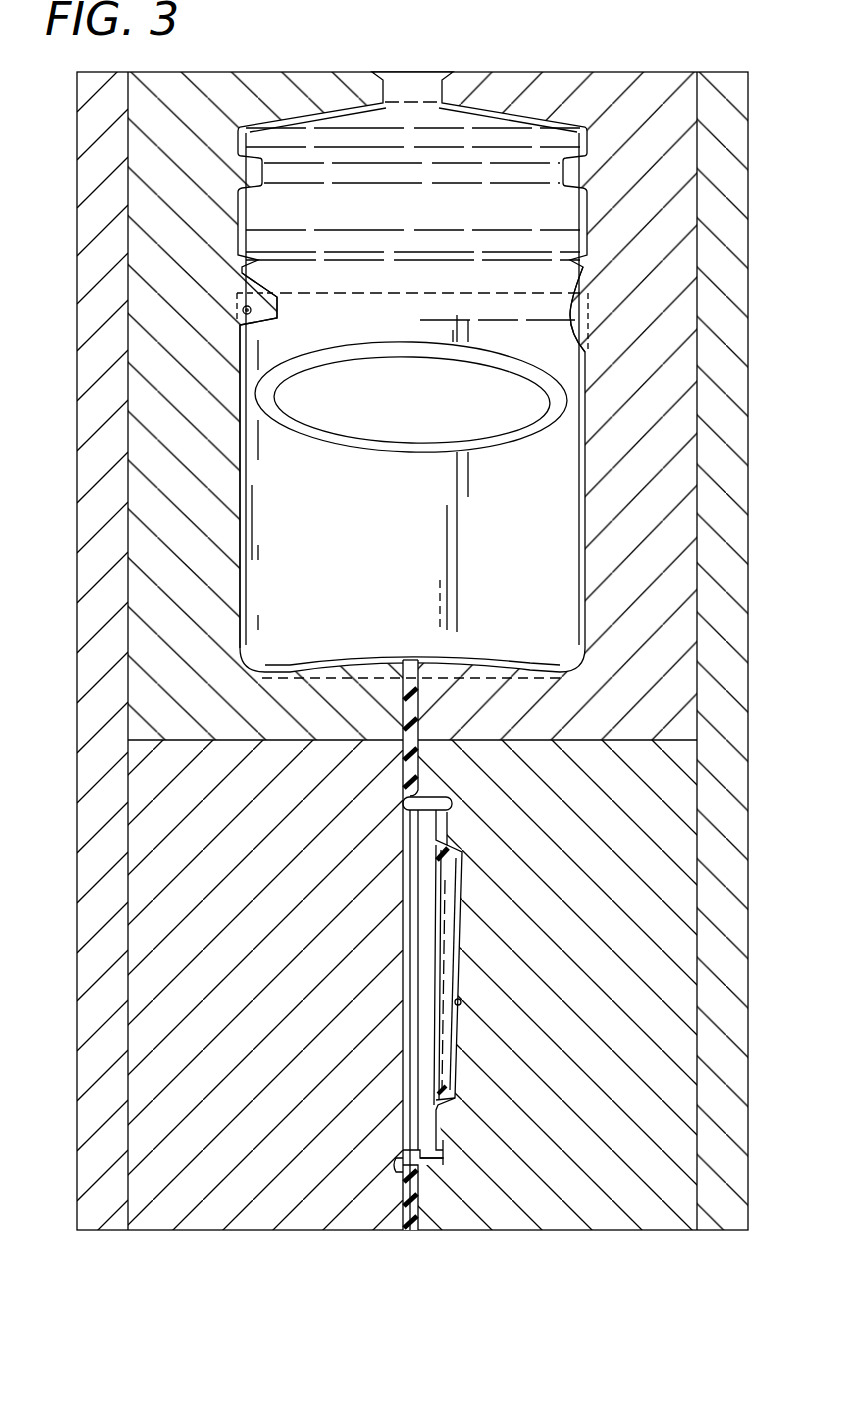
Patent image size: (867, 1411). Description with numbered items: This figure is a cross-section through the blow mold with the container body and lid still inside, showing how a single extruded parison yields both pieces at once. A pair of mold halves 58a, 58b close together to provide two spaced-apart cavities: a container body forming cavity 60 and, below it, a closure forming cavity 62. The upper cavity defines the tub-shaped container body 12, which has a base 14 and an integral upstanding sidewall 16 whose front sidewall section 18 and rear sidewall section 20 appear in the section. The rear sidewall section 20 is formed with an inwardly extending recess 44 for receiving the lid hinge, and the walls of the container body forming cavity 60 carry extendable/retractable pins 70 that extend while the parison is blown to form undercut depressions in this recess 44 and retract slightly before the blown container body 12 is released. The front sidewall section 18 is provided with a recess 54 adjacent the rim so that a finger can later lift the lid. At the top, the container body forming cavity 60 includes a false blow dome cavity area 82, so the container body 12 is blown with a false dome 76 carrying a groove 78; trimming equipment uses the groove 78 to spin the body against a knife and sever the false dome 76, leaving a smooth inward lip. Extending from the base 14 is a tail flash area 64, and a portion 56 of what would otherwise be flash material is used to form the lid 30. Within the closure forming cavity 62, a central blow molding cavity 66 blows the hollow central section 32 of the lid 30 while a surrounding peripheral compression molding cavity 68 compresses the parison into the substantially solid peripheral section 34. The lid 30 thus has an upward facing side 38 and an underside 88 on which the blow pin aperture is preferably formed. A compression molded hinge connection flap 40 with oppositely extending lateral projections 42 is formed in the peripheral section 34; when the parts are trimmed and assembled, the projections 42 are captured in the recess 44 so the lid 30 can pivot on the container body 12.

The container body 12 is at (245, 615).
The base 14 is at (337, 660).
The sidewall 16 is at (247, 507).
The front sidewall section 18 is at (573, 492).
The rear sidewall section 20 is at (245, 565).
The lid 30 is at (445, 1140).
The hollow central section 32 is at (452, 1066).
The solid peripheral section 34 is at (430, 1160).
The upward facing side 38 is at (467, 897).
The hinge connection flap 40 is at (415, 1158).
The lateral projections 42 is at (393, 1140).
The recess 44 is at (267, 307).
The recess 54 is at (567, 313).
The portion of flash material 56 is at (423, 765).
The mold half 58a is at (263, 1220).
The mold half 58b is at (610, 1225).
The container body forming cavity 60 is at (577, 547).
The closure forming cavity 62 is at (440, 823).
The tail flash area 64 is at (448, 652).
The central blow molding cavity 66 is at (463, 1002).
The peripheral compression molding cavity 68 is at (403, 807).
The extendable/retractable pins 70 is at (277, 318).
The false dome 76 is at (587, 202).
The groove 78 is at (557, 170).
The false blow dome cavity area 82 is at (322, 126).
The underside 88 is at (443, 908).